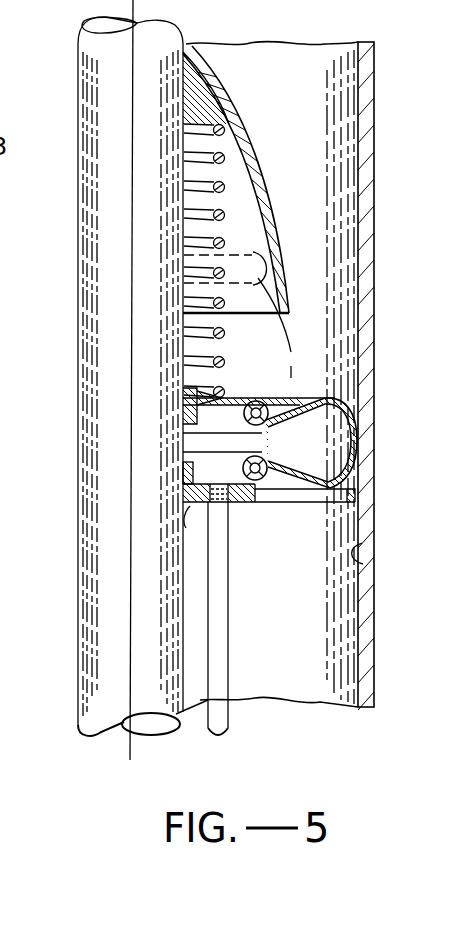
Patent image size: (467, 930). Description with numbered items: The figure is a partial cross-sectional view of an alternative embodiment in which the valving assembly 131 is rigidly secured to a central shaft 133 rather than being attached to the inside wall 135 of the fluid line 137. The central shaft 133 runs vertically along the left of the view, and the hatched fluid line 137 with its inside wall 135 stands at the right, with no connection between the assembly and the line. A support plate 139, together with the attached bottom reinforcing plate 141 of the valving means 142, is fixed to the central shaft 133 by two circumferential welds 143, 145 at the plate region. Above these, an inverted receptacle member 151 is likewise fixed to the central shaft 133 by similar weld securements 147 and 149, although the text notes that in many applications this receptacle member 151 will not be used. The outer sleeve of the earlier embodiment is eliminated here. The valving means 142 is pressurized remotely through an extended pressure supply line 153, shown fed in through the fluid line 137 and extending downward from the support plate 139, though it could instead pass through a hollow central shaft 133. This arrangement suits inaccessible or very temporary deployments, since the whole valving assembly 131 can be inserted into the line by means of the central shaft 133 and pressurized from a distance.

The valving assembly 131 is at (319, 218).
The central shaft 133 is at (112, 73).
The inside wall 135 is at (357, 549).
The fluid line 137 is at (367, 385).
The support plate 139 is at (240, 504).
The bottom reinforcing plate 141 is at (198, 462).
The valving means 142 is at (258, 456).
The circumferential weld 143 is at (184, 468).
The circumferential weld 145 is at (190, 506).
The weld securement 147 is at (186, 132).
The weld securement 149 is at (186, 52).
The receptacle member 151 is at (249, 152).
The pressure supply line 153 is at (220, 589).